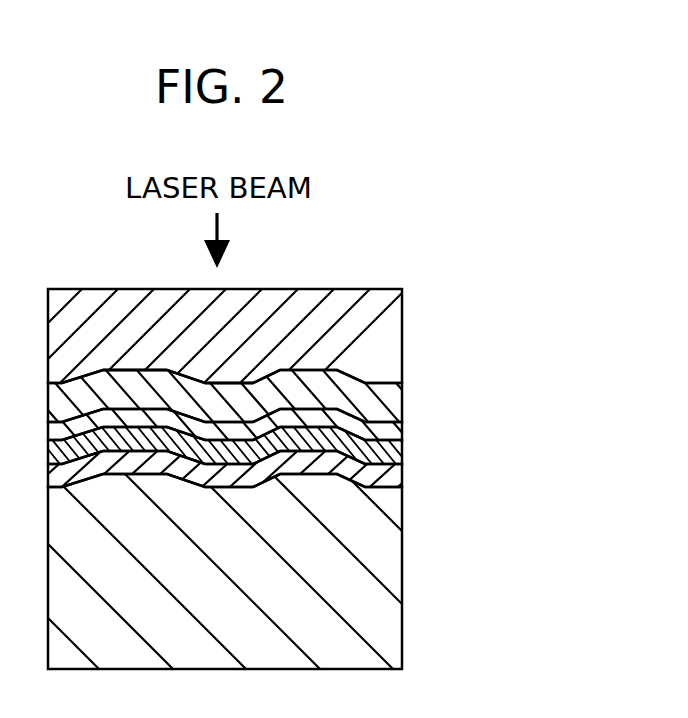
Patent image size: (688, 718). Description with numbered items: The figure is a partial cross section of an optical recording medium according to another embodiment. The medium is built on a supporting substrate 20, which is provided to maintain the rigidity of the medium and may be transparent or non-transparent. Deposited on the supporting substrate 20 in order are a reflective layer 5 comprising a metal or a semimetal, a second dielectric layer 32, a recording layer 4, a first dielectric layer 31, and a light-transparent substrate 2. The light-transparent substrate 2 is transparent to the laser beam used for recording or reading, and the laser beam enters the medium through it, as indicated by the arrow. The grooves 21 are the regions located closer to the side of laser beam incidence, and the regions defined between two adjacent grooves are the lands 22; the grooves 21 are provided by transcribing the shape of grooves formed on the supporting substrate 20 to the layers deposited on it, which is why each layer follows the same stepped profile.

The light-transparent substrate 2 is at (400, 325).
The first dielectric layer 31 is at (400, 395).
The recording layer 4 is at (400, 428).
The second dielectric layer 32 is at (400, 453).
The reflective layer 5 is at (400, 472).
The supporting substrate 20 is at (400, 522).
The grooves 21 is at (148, 370).
The lands 22 is at (225, 383).